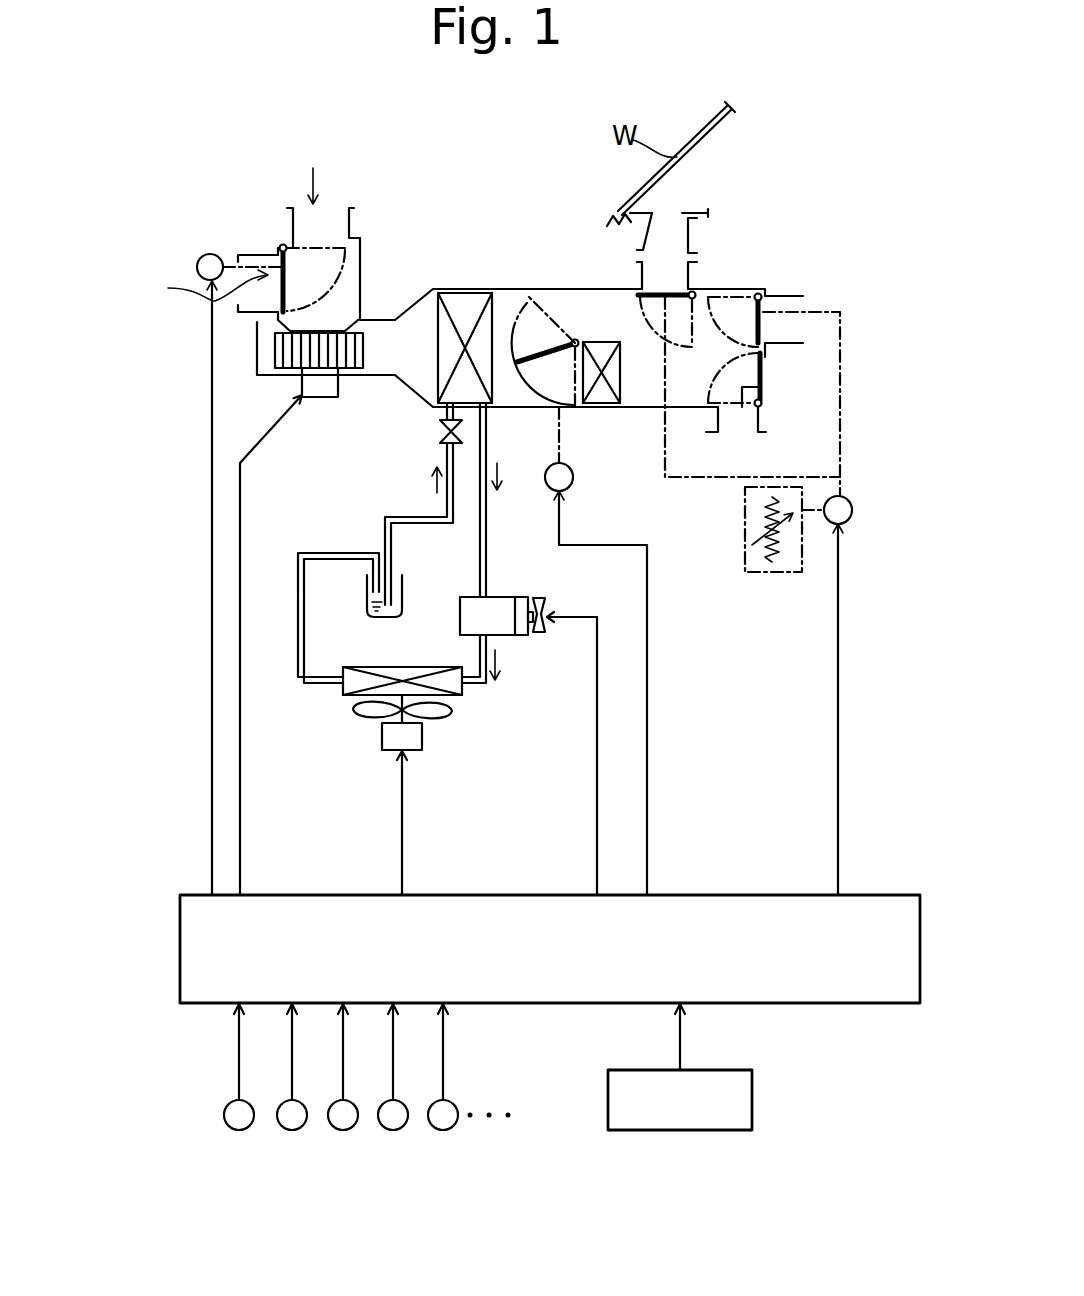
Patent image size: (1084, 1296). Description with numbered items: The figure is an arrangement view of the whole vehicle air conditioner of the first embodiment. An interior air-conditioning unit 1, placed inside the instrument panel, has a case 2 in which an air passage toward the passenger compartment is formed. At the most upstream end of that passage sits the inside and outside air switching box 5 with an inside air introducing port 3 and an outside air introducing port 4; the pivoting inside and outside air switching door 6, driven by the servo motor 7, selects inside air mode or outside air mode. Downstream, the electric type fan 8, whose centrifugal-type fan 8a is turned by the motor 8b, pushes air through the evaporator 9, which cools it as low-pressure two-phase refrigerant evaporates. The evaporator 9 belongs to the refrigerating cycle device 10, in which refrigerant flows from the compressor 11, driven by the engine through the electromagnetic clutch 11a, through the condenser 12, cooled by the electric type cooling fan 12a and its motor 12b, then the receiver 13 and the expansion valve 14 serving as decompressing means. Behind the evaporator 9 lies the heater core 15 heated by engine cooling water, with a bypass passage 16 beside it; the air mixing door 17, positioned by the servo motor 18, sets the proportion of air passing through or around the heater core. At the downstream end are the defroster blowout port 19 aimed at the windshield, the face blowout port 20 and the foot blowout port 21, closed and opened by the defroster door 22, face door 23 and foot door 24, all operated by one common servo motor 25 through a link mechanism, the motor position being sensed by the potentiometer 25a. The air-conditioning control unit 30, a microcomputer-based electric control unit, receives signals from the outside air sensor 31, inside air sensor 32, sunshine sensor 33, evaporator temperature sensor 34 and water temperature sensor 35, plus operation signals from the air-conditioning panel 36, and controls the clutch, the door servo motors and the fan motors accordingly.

The interior air-conditioning unit 1 is at (537, 287).
The case 2 is at (563, 287).
The inside air introducing port 3 is at (247, 305).
The outside air introducing port 4 is at (330, 213).
The inside and outside air switching box 5 is at (360, 256).
The inside and outside air switching door 6 is at (290, 292).
The servo motor 7 is at (208, 252).
The electric type fan 8 is at (250, 347).
The centrifugal-type fan 8a is at (260, 358).
The motor 8b is at (317, 397).
The evaporator 9 is at (463, 310).
The refrigerating cycle device 10 is at (372, 540).
The compressor 11 is at (497, 618).
The electromagnetic clutch 11a is at (542, 632).
The condenser 12 is at (370, 667).
The electric type cooling fan 12a is at (353, 710).
The motor 12b is at (382, 738).
The receiver 13 is at (367, 588).
The expansion valve 14 is at (440, 430).
The heater core 15 is at (622, 380).
The bypass passage 16 is at (600, 310).
The air mixing door 17 is at (545, 392).
The servo motor 18 is at (573, 476).
The defroster blowout port 19 is at (670, 278).
The face blowout port 20 is at (785, 335).
The foot blowout port 21 is at (730, 430).
The defroster door 22 is at (653, 285).
The face door 23 is at (763, 320).
The foot door 24 is at (763, 373).
The servo motor 25 is at (853, 508).
The potentiometer 25a is at (763, 573).
The air-conditioning control unit 30 is at (893, 895).
The outside air sensor 31 is at (239, 1130).
The inside air sensor 32 is at (292, 1130).
The sunshine sensor 33 is at (343, 1130).
The evaporator temperature sensor 34 is at (393, 1130).
The water temperature sensor 35 is at (443, 1130).
The air-conditioning panel 36 is at (688, 1133).